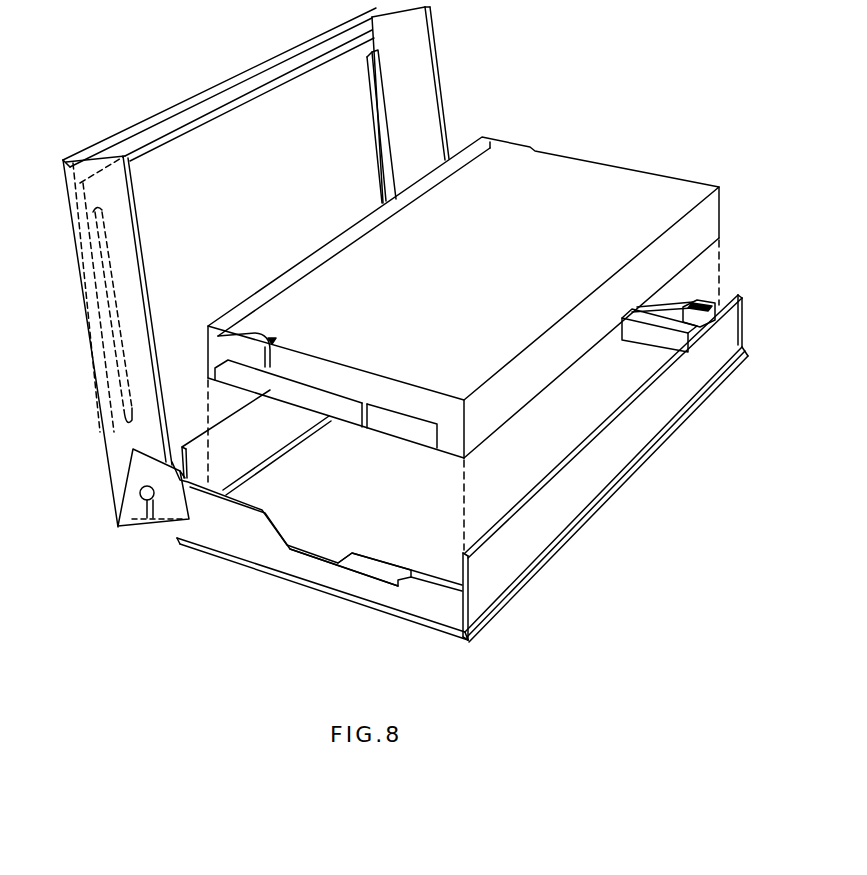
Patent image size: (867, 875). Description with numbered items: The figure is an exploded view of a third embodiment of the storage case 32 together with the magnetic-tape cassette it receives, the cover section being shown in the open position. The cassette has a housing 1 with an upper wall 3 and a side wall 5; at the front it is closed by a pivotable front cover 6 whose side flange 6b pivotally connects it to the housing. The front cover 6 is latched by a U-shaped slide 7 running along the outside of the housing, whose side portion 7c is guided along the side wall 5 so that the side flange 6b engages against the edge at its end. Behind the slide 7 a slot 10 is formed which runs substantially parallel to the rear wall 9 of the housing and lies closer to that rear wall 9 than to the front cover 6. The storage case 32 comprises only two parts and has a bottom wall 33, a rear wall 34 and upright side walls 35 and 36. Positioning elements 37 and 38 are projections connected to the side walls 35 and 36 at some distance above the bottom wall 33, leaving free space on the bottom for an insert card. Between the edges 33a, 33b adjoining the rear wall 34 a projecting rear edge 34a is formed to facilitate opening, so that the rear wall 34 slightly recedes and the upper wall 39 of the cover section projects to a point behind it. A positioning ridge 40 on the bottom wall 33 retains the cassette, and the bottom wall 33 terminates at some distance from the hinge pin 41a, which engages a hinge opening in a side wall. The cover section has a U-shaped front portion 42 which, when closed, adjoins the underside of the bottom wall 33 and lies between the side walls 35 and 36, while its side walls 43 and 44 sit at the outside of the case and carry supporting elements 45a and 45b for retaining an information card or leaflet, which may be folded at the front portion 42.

The housing 1 is at (618, 158).
The upper wall 3 is at (573, 207).
The side wall 5 is at (393, 393).
The front cover 6 is at (271, 289).
The side flange 6b is at (231, 345).
The slide 7 is at (290, 393).
The side portion 7c is at (357, 418).
The rear wall 9 is at (568, 358).
The slot 10 is at (417, 428).
The storage case 32 is at (475, 517).
The bottom wall 33 is at (395, 550).
The edge 33a is at (453, 633).
The edge 33b is at (745, 346).
The rear wall 34 is at (612, 462).
The projecting rear edge 34a is at (668, 432).
The side wall 35 is at (415, 590).
The side wall 36 is at (704, 305).
The positioning element 37 is at (360, 562).
The positioning element 38 is at (638, 338).
The upper wall 39 is at (203, 92).
The positioning ridge 40 is at (268, 462).
The hinge pin 41a is at (137, 493).
The front portion 42 is at (226, 445).
The side wall 43 is at (130, 318).
The side wall 44 is at (414, 68).
The supporting element 45a is at (103, 246).
The supporting element 45b is at (383, 115).